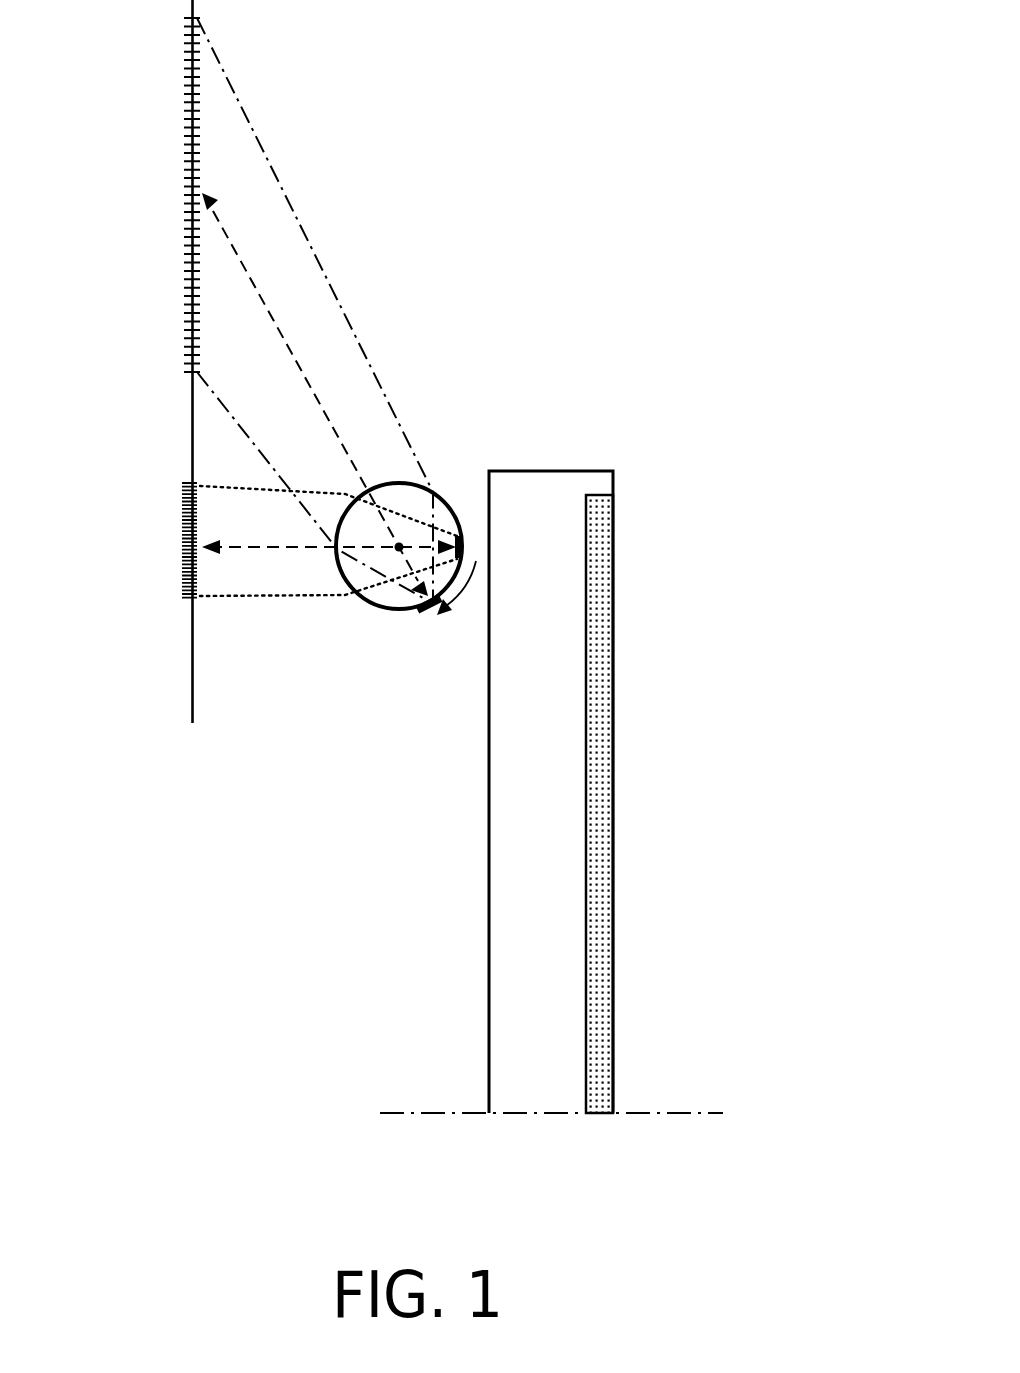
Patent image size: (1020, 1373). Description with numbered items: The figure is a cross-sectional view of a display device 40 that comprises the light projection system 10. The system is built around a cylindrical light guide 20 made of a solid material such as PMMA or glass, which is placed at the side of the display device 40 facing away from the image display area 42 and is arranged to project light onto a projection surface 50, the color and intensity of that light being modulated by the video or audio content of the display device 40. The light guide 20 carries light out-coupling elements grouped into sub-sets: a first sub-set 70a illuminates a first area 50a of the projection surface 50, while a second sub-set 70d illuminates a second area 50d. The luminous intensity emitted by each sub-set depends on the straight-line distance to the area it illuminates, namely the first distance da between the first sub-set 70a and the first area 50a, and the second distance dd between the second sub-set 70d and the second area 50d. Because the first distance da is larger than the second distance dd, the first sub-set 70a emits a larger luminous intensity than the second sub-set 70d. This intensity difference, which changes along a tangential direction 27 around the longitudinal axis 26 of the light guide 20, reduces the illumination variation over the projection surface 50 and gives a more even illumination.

The light projection system 10 is at (449, 343).
The cylindrical light guide 20 is at (390, 497).
The longitudinal axis 26 is at (397, 549).
The tangential direction 27 is at (463, 592).
The display device 40 is at (648, 193).
The image display area 42 is at (613, 623).
The projection surface 50 is at (192, 673).
The first area 50a is at (183, 167).
The second area 50d is at (182, 495).
The first sub-set 70a is at (424, 608).
The second sub-set 70d is at (458, 537).
The first distance da is at (283, 343).
The second distance dd is at (273, 551).